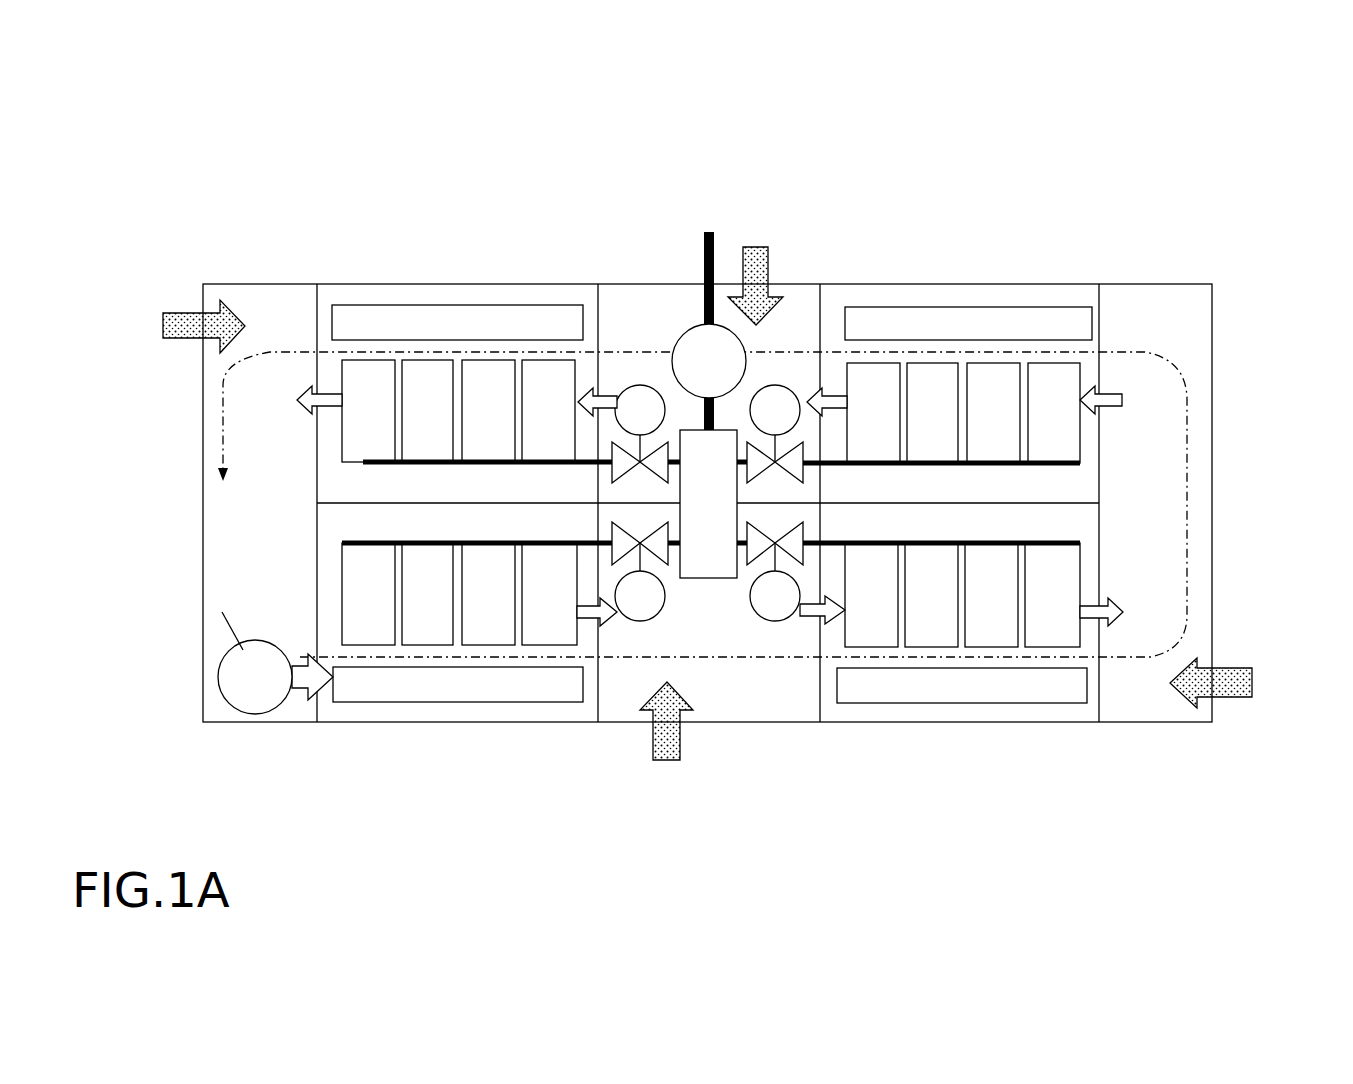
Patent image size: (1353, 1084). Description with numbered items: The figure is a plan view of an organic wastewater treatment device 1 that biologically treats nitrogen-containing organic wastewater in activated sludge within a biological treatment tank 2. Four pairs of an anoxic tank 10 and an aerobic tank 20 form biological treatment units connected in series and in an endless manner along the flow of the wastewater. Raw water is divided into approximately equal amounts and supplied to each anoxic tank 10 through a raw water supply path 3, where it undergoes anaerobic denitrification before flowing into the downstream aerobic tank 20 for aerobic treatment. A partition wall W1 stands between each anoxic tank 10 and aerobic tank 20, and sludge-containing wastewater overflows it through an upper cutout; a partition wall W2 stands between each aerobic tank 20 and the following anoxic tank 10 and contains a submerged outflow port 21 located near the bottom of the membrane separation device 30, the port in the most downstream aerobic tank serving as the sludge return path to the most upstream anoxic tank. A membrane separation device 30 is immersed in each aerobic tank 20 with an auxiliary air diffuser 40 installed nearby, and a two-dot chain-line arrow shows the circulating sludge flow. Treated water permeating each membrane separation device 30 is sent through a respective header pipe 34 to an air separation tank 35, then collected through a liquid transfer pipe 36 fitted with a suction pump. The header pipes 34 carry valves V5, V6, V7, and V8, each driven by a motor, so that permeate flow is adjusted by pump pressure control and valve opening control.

The organic wastewater treatment device 1 is at (772, 158).
The biological treatment tank 2 is at (1134, 281).
The raw water supply path 3 is at (180, 310).
The anoxic tank 10 is at (701, 503).
The aerobic tank 20 is at (468, 295).
The outflow port 21 is at (303, 378).
The membrane separation device 30 is at (545, 360).
The header pipe 34 is at (548, 463).
The air separation tank 35 is at (718, 572).
The liquid transfer pipe 36 is at (705, 235).
The auxiliary air diffuser 40 is at (532, 320).
The valve V5 is at (640, 622).
The valve V6 is at (775, 622).
The valve V7 is at (775, 385).
The valve V8 is at (640, 385).
The partition wall W1 is at (315, 620).
The partition wall W2 is at (313, 452).